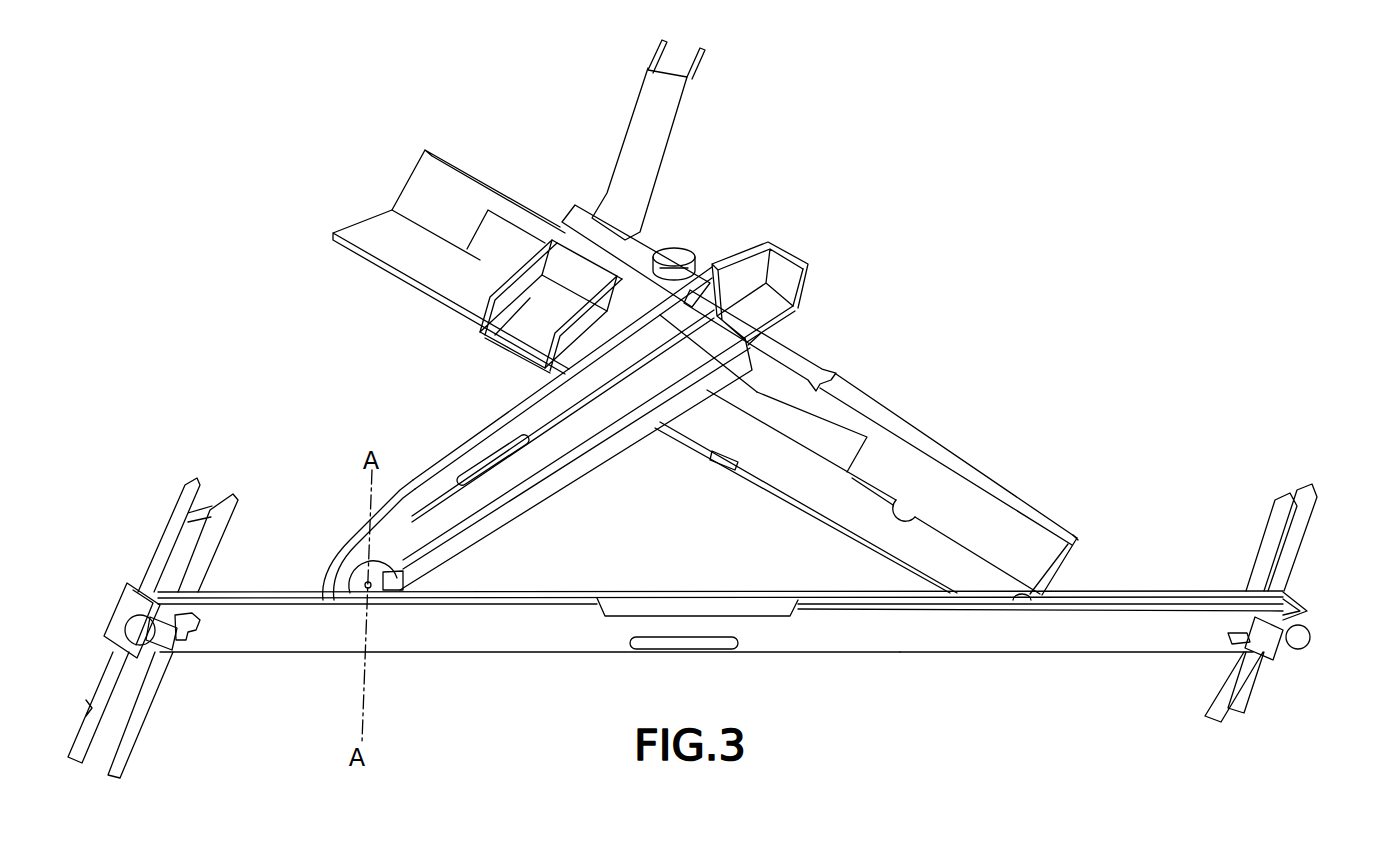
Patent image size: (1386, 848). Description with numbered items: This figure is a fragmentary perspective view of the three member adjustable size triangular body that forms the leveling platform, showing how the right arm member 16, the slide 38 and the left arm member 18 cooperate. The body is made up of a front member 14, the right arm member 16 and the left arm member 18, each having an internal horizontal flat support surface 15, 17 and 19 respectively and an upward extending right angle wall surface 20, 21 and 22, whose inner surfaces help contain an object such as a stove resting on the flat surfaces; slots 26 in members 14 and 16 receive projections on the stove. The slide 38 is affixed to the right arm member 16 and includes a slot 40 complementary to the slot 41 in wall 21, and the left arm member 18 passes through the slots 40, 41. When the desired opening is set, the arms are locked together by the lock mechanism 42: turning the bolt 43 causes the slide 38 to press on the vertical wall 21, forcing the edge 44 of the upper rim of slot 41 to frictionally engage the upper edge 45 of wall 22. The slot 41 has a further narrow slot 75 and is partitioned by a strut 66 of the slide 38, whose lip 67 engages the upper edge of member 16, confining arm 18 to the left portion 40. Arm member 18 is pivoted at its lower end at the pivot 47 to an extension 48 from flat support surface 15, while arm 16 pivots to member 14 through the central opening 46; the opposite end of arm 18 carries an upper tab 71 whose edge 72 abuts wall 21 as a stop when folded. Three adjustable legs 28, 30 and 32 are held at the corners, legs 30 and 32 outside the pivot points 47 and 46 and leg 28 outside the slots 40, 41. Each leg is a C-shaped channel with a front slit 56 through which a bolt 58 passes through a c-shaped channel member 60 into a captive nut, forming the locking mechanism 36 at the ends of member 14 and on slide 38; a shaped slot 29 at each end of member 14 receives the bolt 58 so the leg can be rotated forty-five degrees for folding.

The front member 14 is at (884, 645).
The flat support surface 15 is at (636, 604).
The right arm member 16 is at (968, 460).
The flat support surface 17 is at (430, 257).
The left arm member 18 is at (548, 428).
The flat support surface 19 is at (505, 485).
The wall surface 20 is at (1043, 642).
The wall surface 21 is at (1030, 528).
The wall surface 22 is at (420, 480).
The slots 26 is at (685, 650).
The leg 28 is at (655, 132).
The shaped slot 29 is at (200, 626).
The leg 30 is at (1207, 688).
The leg 32 is at (148, 738).
The locking mechanism 36 is at (178, 642).
The slide 38 is at (583, 228).
The slot 40 is at (745, 330).
The slot 41 is at (826, 430).
The lock mechanism 42 is at (692, 222).
The bolt 43 is at (690, 253).
The edge 44 is at (680, 307).
The upper edge 45 is at (530, 402).
The central opening 46 is at (1040, 580).
The pivot 47 is at (430, 558).
The extension 48 is at (318, 582).
The front slit 56 is at (162, 548).
The bolt 58 is at (118, 640).
The c-shaped channel member 60 is at (112, 595).
The strut 66 is at (772, 420).
The lip 67 is at (835, 358).
The upper tab 71 is at (788, 270).
The edge 72 is at (810, 284).
The narrow slot 75 is at (920, 505).